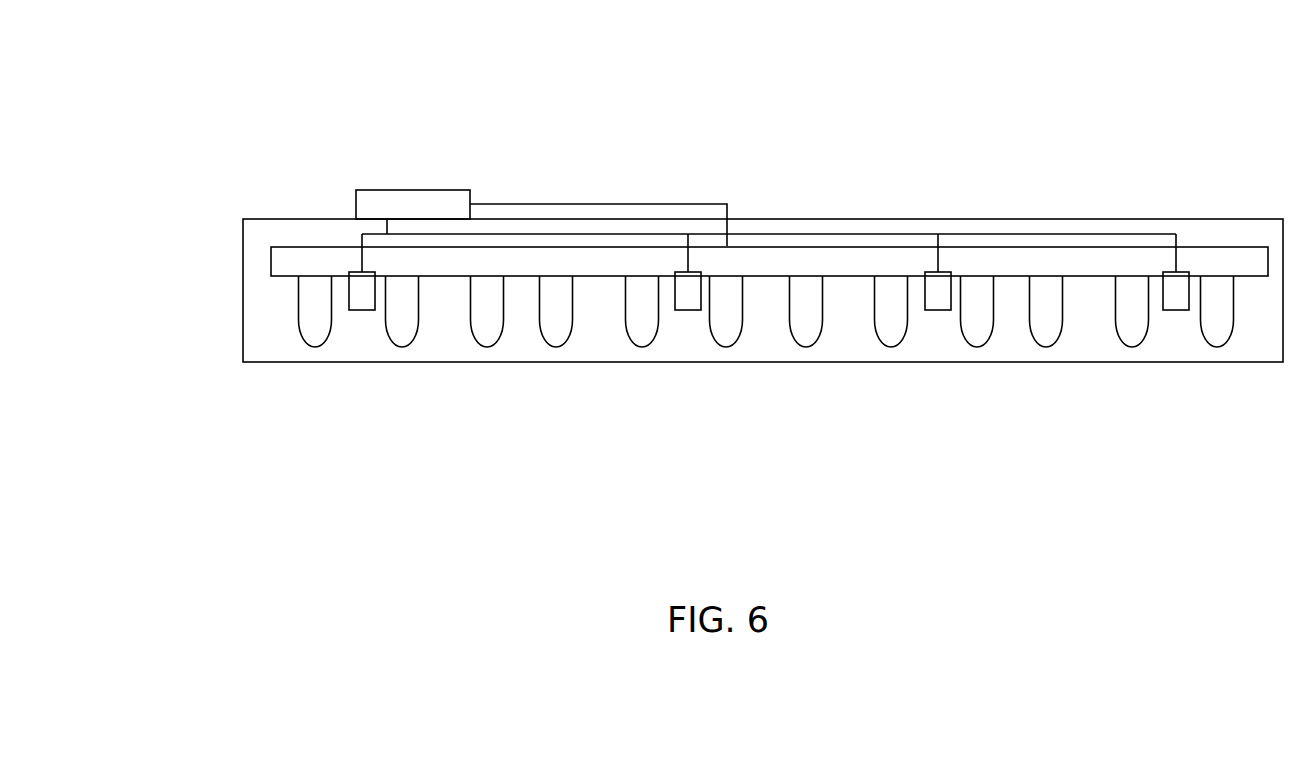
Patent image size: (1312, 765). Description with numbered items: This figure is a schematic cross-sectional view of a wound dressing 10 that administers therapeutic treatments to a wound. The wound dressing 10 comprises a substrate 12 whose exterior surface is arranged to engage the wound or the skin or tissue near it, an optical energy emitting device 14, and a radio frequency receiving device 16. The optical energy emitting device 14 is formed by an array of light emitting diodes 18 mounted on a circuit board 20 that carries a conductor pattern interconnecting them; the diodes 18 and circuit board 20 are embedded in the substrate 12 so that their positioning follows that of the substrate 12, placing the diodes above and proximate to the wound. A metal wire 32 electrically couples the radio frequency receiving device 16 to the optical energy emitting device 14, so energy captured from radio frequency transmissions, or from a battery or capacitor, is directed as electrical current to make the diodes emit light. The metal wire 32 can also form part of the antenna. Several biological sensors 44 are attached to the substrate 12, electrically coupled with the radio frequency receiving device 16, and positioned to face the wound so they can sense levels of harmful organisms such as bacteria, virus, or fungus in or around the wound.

The wound dressing 10 is at (337, 498).
The substrate 12 is at (263, 235).
The optical energy emitting device 14 is at (1100, 235).
The radio frequency receiving device 16 is at (412, 198).
The light emitting diodes 18 is at (813, 334).
The circuit board 20 is at (837, 262).
The metal wire 32 is at (573, 200).
The biological sensors 44 is at (363, 300).